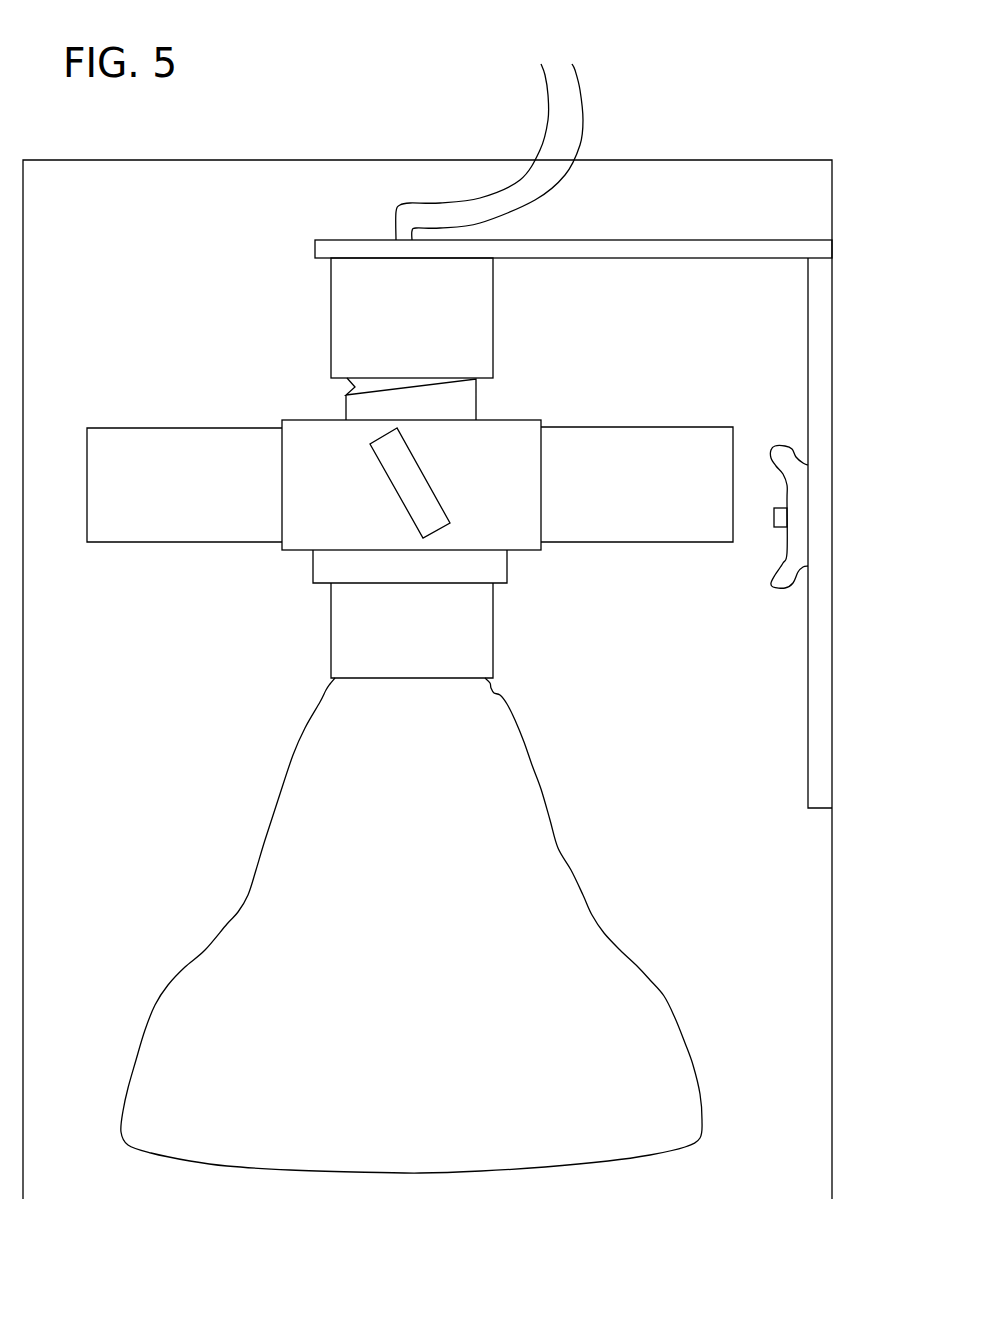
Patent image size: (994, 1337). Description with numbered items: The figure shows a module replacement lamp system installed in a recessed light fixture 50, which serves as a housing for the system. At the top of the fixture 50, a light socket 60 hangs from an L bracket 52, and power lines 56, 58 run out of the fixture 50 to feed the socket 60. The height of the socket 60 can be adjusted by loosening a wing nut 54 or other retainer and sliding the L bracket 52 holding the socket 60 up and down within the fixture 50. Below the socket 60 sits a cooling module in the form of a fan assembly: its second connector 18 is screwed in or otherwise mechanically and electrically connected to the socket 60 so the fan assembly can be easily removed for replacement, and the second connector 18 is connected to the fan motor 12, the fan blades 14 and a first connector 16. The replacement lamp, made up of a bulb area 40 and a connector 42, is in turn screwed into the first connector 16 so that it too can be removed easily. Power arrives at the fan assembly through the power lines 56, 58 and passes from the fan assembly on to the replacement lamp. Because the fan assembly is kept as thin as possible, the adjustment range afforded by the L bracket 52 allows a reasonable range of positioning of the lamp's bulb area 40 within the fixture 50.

The fan motor 12 is at (510, 419).
The fan blades 14 is at (625, 426).
The first connector 16 is at (509, 567).
The second connector 18 is at (477, 402).
The bulb area 40 is at (571, 878).
The connector 42 is at (494, 614).
The recessed light fixture 50 is at (686, 166).
The L bracket 52 is at (784, 242).
The wing nut 54 is at (798, 537).
The power line 56 is at (583, 104).
The power line 58 is at (540, 142).
The light socket 60 is at (332, 344).